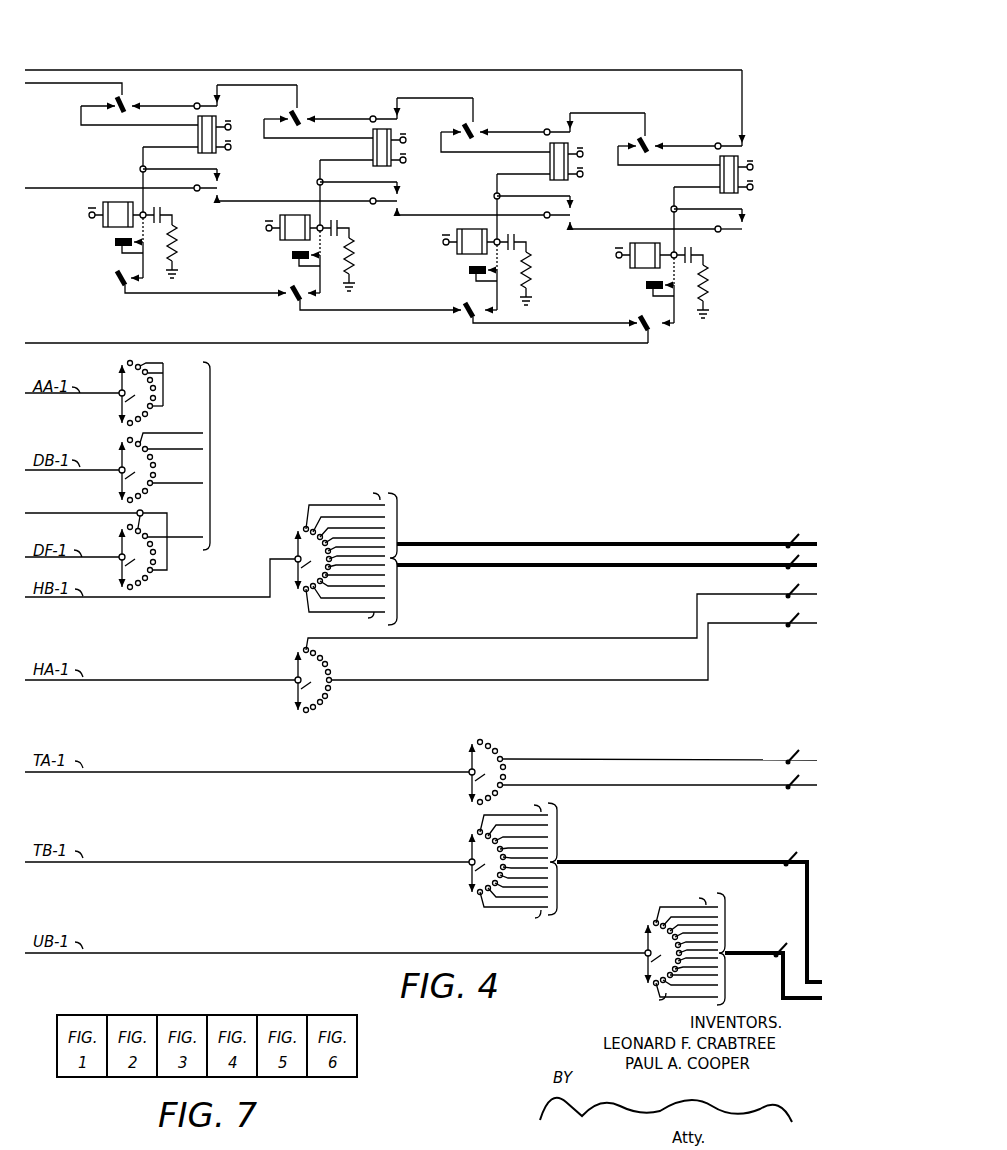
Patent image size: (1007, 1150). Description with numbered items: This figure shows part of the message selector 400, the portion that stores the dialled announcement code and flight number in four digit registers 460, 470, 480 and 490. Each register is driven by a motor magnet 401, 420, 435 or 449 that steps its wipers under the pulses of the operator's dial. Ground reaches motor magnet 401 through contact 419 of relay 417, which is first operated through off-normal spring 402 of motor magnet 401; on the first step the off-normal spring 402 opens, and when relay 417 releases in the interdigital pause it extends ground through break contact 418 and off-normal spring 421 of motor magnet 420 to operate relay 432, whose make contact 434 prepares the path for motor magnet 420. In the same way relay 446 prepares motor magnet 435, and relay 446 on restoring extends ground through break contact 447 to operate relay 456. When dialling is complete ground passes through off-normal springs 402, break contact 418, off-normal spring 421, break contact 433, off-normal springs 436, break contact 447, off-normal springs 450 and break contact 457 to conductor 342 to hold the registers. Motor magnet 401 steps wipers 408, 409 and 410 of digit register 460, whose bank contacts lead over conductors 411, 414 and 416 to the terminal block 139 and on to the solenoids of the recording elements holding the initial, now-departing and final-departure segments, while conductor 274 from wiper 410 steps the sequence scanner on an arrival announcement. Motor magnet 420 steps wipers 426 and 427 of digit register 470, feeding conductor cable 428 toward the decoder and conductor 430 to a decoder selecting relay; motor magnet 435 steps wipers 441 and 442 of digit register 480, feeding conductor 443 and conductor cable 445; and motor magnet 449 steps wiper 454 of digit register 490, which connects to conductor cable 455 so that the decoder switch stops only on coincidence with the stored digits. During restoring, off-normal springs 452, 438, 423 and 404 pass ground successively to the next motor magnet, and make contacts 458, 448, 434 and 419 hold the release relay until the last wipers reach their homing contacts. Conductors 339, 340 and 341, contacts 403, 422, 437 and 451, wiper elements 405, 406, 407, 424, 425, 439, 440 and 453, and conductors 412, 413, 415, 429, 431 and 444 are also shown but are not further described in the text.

The message selector 400 is at (186, 14).
The conductor 342 is at (62, 70).
The conductor 341 is at (60, 86).
The conductor 340 is at (73, 186).
The conductor 339 is at (77, 344).
The digit register 460 is at (128, 179).
The digit register 470 is at (306, 193).
The digit register 480 is at (483, 205).
The digit register 490 is at (656, 217).
The motor magnet 401 is at (95, 210).
The off-normal spring 402 is at (132, 111).
The interrupter contact 403 is at (115, 247).
The off-normal springs 404 is at (110, 283).
The relay 417 is at (198, 136).
The break contact 418 is at (212, 102).
The contact of relay 419 is at (222, 184).
The motor magnet 420 is at (272, 222).
The off-normal spring 421 is at (290, 113).
The interrupter contact 422 is at (292, 260).
The off-normal springs 423 is at (291, 298).
The relay 432 is at (372, 150).
The break contact 433 is at (393, 112).
The contact of relay 434 is at (399, 200).
The motor magnet 435 is at (452, 236).
The off-normal springs 436 is at (487, 125).
The interrupter contact 437 is at (468, 276).
The off-normal springs 438 is at (466, 316).
The relay 446 is at (549, 163).
The break contact 447 is at (562, 126).
The contact of relay 448 is at (573, 214).
The motor magnet 449 is at (620, 249).
The off-normal springs 450 is at (638, 140).
The interrupter contact 451 is at (645, 290).
The off-normal springs 452 is at (637, 328).
The relay 456 is at (719, 177).
The break contact 457 is at (738, 142).
The make contact 458 is at (745, 231).
The terminal block 139 is at (249, 456).
The conductor 274 is at (78, 511).
The wiper blade 405 is at (120, 400).
The wiper blade 406 is at (124, 477).
The wiper blade 407 is at (122, 564).
The wiper 408 is at (113, 385).
The wiper 409 is at (120, 455).
The wiper 410 is at (118, 540).
The conductor 411 is at (196, 377).
The conductor 412 is at (197, 408).
The conductor 413 is at (198, 432).
The conductor 414 is at (197, 449).
The conductor 415 is at (198, 482).
The conductor 416 is at (205, 540).
The stepping switch 424 is at (298, 528).
The wiper 426 is at (296, 555).
The wiper 427 is at (288, 666).
The wiper blade 425 is at (295, 686).
The conductor cable 428 is at (484, 540).
The conductor 429 is at (494, 568).
The conductor 430 is at (486, 636).
The conductor 431 is at (476, 678).
The wiper blade 439 is at (470, 778).
The wiper 441 is at (465, 758).
The wiper blade 440 is at (470, 866).
The wiper 442 is at (467, 848).
The conductor 443 is at (600, 758).
The conductor 444 is at (620, 783).
The conductor cable 445 is at (628, 858).
The wiper blade 453 is at (652, 958).
The wiper 454 is at (640, 940).
The conductor cable 455 is at (775, 948).